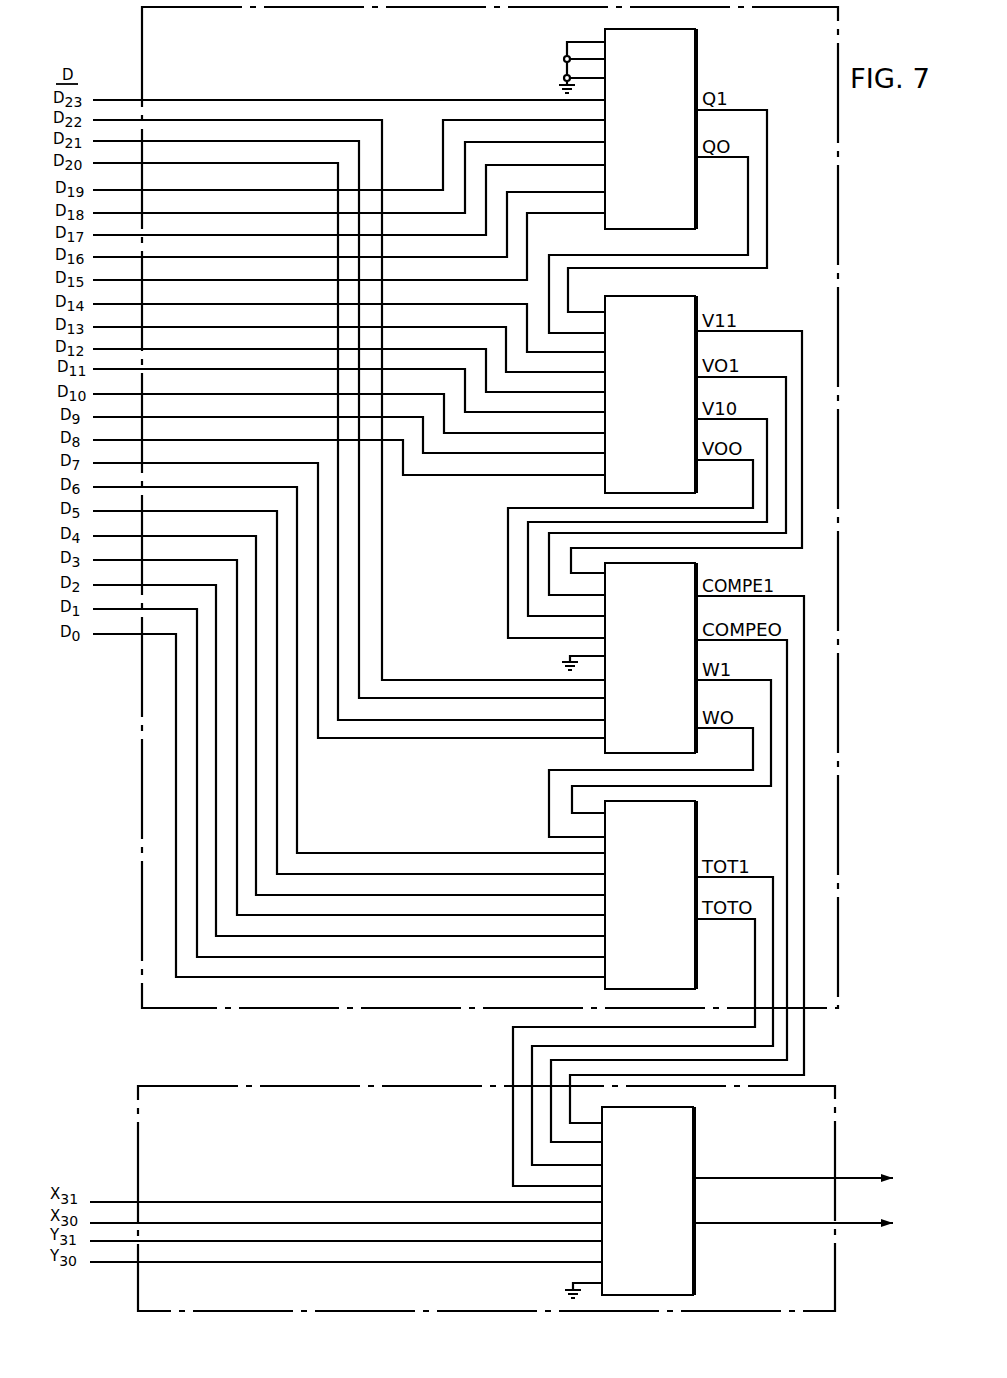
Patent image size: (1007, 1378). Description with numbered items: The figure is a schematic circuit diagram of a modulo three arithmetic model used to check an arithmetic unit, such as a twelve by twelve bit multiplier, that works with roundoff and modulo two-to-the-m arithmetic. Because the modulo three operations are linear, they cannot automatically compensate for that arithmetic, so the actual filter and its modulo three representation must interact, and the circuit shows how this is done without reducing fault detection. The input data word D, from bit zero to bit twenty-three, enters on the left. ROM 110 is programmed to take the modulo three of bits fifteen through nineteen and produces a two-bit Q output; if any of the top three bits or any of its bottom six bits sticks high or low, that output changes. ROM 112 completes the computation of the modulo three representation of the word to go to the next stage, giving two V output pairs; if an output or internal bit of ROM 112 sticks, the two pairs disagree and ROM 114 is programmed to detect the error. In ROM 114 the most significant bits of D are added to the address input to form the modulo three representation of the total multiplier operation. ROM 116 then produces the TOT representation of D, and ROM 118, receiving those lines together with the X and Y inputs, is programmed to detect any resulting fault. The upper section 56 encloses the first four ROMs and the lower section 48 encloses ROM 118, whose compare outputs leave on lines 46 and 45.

The ROM 110 is at (664, 150).
The ROM 112 is at (664, 416).
The ROM 114 is at (664, 679).
The ROM 116 is at (664, 916).
The ROM 118 is at (661, 1222).
The comparison logic section 56 is at (468, 1002).
The output logic section 48 is at (468, 1112).
The COMPALL1 output line 46 is at (870, 1179).
The COMPALLO output line 45 is at (870, 1223).